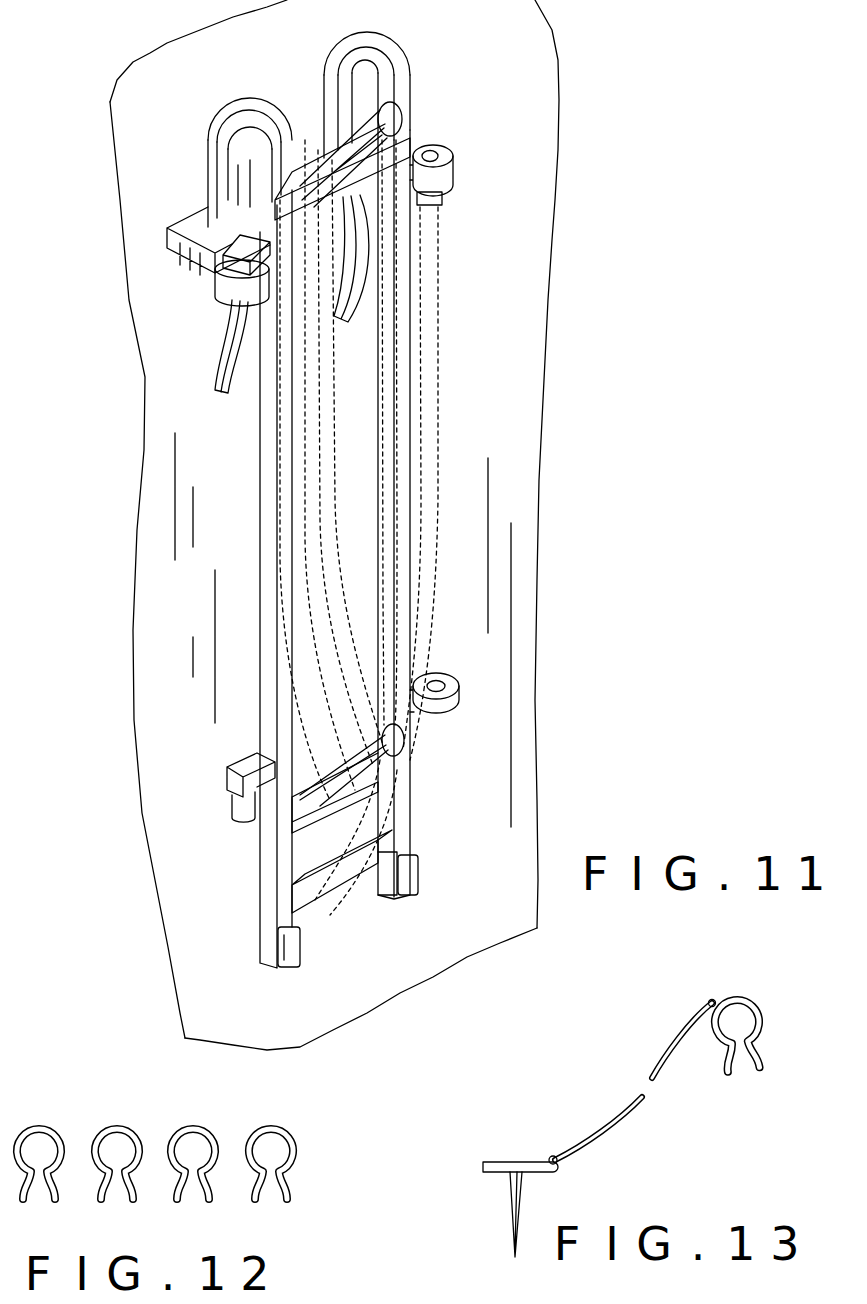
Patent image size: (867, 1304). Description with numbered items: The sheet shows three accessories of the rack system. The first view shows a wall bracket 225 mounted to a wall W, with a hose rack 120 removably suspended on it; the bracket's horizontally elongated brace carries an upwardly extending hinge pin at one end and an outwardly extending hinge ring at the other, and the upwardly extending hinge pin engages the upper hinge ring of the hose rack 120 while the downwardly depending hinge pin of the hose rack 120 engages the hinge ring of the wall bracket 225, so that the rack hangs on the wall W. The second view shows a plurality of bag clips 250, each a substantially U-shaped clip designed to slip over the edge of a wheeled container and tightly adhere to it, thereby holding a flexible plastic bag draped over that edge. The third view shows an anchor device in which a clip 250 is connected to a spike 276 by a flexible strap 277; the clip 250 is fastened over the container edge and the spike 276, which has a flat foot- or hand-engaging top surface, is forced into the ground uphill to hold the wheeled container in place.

In FIG. 11, the hose rack 120 is at (413, 363).
In FIG. 11, the wall bracket 225 is at (177, 222).
In FIG. 11, the wall W is at (483, 367).
In FIG. 12, the bag clip 250 is at (36, 1124).
In FIG. 13, the bag clip 250 is at (752, 998).
In FIG. 13, the spike 276 is at (528, 1162).
In FIG. 13, the flexible strap 277 is at (617, 1123).